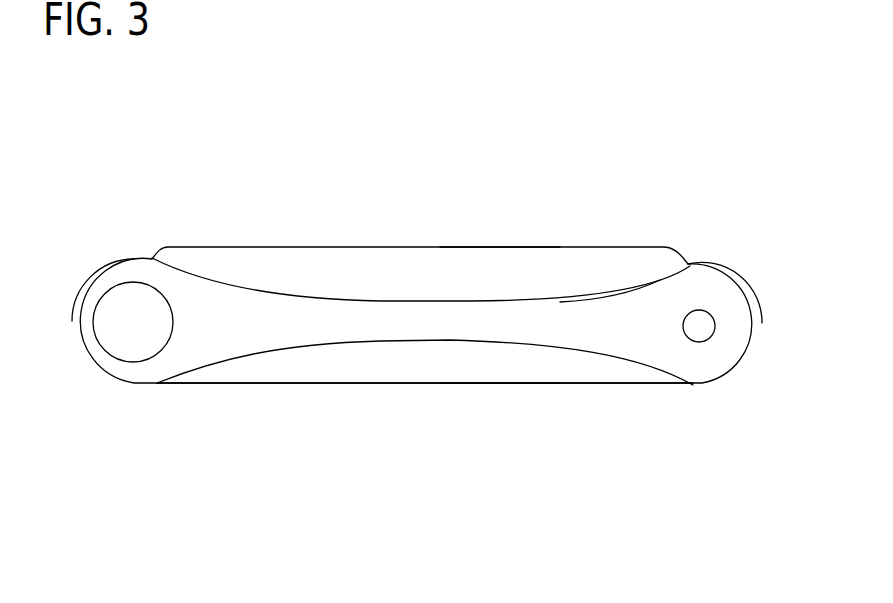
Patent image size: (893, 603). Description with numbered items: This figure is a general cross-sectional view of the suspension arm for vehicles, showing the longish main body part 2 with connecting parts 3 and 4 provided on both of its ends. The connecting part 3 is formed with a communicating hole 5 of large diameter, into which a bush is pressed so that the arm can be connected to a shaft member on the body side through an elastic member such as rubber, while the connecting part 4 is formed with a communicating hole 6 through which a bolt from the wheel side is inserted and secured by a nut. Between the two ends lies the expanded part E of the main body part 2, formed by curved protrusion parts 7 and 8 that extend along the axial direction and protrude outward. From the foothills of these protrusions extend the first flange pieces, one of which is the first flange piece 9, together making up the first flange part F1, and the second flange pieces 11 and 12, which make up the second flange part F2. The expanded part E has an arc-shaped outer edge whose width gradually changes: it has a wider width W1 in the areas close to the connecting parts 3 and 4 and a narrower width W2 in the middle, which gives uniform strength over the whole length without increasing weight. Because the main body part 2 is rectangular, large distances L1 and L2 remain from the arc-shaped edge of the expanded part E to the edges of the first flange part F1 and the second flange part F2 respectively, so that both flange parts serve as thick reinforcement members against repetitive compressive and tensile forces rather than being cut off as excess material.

The main body part 2 is at (105, 135).
The connecting part 3 is at (98, 253).
The connecting part 4 is at (166, 172).
The communicating hole 5 is at (125, 333).
The communicating hole 6 is at (703, 332).
The curved protrusion part 7 is at (425, 383).
The curved protrusion part 8 is at (282, 325).
The first flange piece 9 is at (425, 422).
The second flange piece 11 is at (421, 250).
The second flange piece 12 is at (301, 268).
The expanded part E is at (599, 278).
The first flange part F1 is at (492, 385).
The second flange part F2 is at (497, 245).
The width W1 is at (180, 271).
The width W2 is at (428, 302).
The distance L1 is at (368, 342).
The distance L2 is at (368, 248).